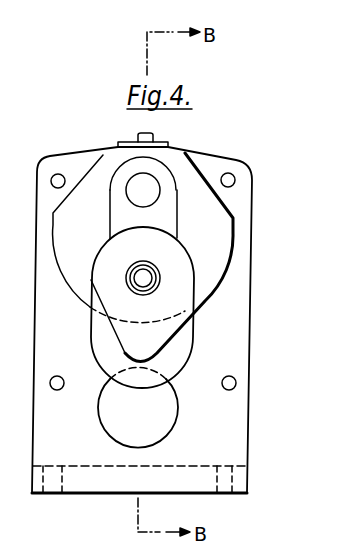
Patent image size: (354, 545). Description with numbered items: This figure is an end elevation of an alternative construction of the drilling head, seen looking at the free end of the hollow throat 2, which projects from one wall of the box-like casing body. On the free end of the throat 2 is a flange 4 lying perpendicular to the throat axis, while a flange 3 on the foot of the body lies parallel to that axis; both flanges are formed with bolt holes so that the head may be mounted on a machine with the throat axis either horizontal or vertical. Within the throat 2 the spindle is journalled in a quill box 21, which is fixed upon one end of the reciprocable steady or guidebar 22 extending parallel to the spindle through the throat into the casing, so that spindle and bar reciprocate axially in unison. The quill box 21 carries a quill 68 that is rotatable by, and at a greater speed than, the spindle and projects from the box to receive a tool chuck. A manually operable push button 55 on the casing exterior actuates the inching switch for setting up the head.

The hollow throat 2 is at (217, 243).
The flange 3 is at (117, 494).
The flange 4 is at (226, 327).
The quill box 21 is at (172, 298).
The reciprocable steady or guidebar 22 is at (156, 178).
The push button 55 is at (153, 136).
The quill 68 is at (146, 293).